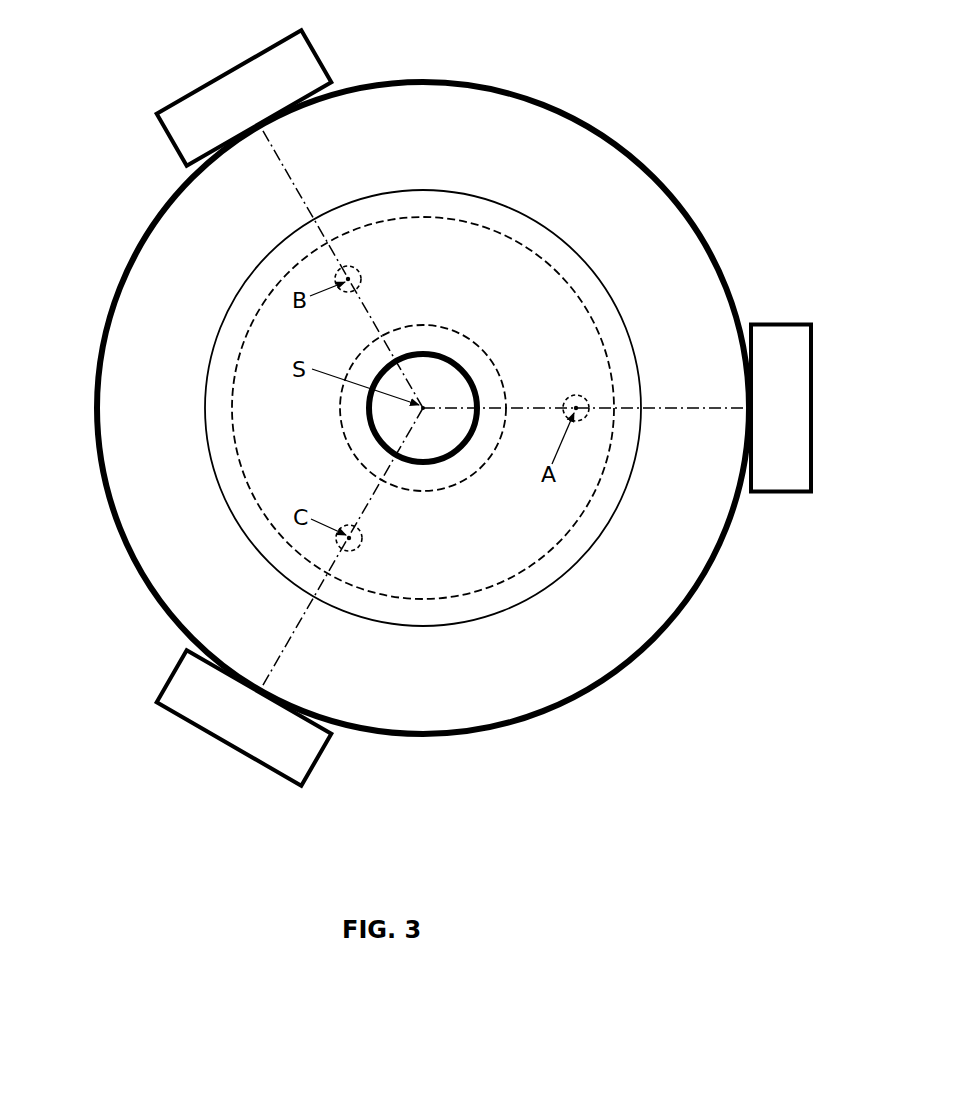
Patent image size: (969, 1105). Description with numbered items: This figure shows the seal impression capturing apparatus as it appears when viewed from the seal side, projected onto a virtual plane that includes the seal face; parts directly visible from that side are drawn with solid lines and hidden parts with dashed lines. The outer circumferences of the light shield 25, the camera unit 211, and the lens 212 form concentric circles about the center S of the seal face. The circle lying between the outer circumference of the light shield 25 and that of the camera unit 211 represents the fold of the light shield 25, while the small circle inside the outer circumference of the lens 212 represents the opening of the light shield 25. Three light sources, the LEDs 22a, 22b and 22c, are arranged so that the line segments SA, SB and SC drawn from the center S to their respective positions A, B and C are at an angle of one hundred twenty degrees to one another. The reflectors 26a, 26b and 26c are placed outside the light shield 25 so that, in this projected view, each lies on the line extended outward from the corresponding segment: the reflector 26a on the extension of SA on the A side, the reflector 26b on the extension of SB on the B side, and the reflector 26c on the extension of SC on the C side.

The light shield 25 is at (588, 122).
The camera unit 211 is at (563, 268).
The lens 212 is at (455, 332).
The LED 22a is at (577, 394).
The LED 22b is at (362, 283).
The LED 22c is at (364, 540).
The reflector 26a is at (782, 325).
The reflector 26b is at (315, 53).
The reflector 26c is at (322, 764).